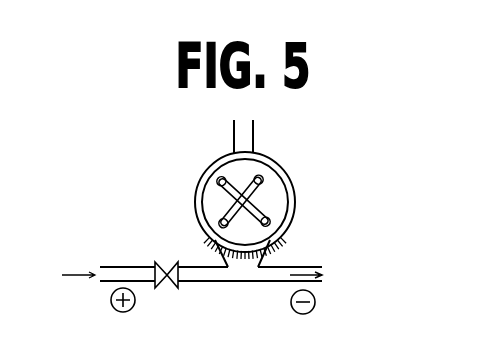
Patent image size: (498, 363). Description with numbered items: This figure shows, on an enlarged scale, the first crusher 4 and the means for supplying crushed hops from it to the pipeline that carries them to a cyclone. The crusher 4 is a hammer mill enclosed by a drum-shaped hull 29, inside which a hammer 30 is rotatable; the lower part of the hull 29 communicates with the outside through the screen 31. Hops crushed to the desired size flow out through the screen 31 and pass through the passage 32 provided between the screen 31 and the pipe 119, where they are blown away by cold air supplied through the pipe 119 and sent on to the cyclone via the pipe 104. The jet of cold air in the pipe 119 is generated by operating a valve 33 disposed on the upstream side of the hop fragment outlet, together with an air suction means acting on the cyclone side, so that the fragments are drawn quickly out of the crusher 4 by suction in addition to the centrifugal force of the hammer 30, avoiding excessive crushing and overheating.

The drum-shaped hull 29 is at (258, 152).
The crusher 4 is at (268, 192).
The hammer 30 is at (268, 215).
The screen 31 is at (270, 245).
The passage 32 is at (217, 247).
The valve 33 is at (168, 289).
The pipe 119 is at (213, 283).
The pipe 104 is at (321, 281).